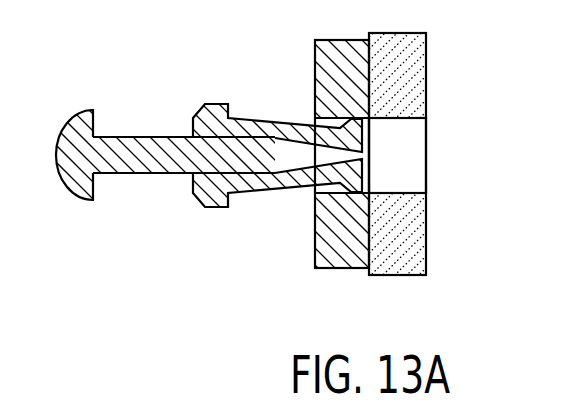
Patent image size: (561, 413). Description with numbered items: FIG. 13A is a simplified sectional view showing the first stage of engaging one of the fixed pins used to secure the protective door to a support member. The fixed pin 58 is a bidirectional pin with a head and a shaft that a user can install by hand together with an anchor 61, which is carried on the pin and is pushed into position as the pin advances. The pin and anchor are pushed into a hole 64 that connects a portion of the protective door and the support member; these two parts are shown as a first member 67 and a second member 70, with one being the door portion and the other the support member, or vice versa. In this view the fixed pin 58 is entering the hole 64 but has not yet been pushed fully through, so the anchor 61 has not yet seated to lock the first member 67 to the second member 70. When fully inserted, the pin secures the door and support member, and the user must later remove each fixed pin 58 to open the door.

The fixed pin 58 is at (135, 147).
The anchor 61 is at (210, 118).
The hole 64 is at (405, 163).
The M1 67 is at (346, 252).
The M2 70 is at (402, 262).